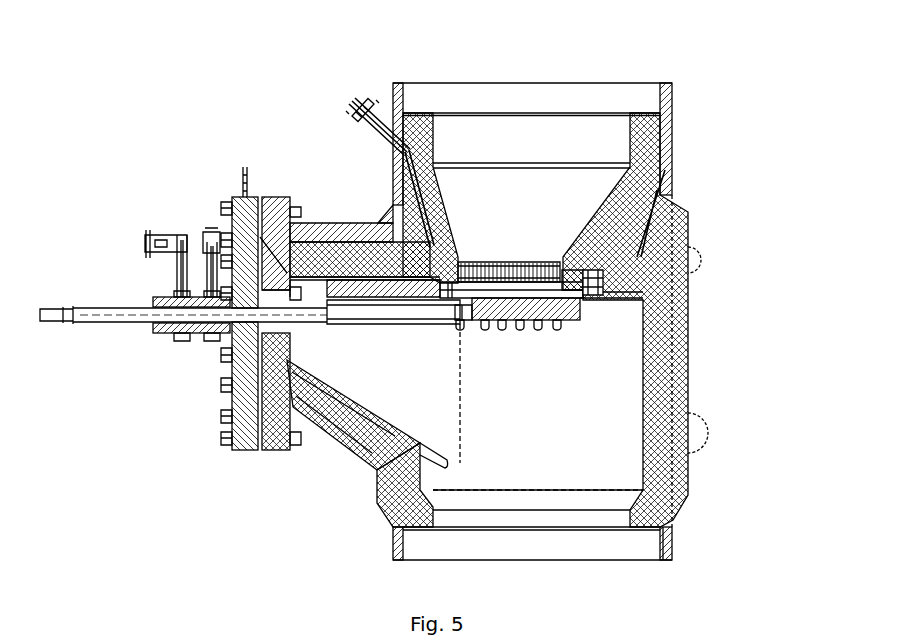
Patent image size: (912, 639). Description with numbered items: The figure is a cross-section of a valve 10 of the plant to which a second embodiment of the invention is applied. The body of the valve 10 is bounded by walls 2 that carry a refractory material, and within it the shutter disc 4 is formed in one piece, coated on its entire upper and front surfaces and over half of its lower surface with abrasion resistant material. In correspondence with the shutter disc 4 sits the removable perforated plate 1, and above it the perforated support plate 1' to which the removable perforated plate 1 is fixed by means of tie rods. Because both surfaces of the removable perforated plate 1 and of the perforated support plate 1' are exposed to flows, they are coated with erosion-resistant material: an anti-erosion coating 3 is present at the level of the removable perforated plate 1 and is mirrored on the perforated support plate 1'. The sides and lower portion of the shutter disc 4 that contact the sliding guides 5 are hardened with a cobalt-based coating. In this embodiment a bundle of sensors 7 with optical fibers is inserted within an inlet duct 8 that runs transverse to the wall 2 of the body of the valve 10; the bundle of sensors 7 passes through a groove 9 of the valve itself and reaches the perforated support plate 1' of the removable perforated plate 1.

The removable perforated plate 1 is at (277, 422).
The perforated support plate 1' is at (674, 321).
The wall 2 is at (665, 170).
The anti-erosion coating 3 is at (566, 268).
The shutter disc 4 is at (585, 322).
The sliding guides 5 is at (318, 312).
The bundle of sensors 7 is at (341, 88).
The inlet duct 8 is at (385, 135).
The groove 9 is at (413, 225).
The valve 10 is at (742, 148).